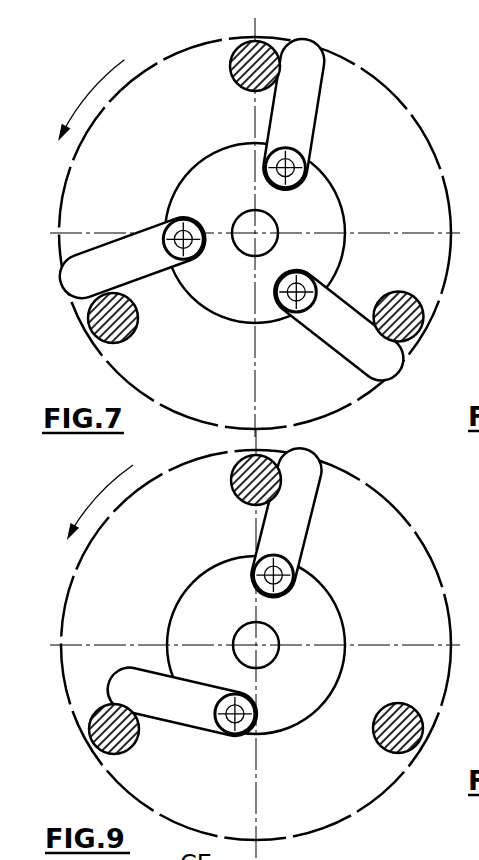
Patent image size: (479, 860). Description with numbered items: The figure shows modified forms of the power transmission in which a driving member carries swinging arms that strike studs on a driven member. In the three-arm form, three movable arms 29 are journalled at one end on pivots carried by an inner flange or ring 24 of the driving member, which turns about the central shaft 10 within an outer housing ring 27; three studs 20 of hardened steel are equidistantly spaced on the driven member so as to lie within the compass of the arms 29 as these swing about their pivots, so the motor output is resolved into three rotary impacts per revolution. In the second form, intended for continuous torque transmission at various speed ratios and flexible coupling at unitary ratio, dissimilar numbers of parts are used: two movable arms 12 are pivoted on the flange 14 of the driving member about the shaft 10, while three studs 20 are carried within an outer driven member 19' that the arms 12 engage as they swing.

In FIG. 7, the outer housing ring 27 is at (423, 138).
In FIG. 7, the inner ring 24 is at (347, 225).
In FIG. 7, the shaft 10 is at (277, 223).
In FIG. 9, the shaft 10 is at (277, 657).
In FIG. 7, the pivoted arm 29 is at (315, 118).
In FIG. 7, the stud 20 is at (232, 74).
In FIG. 9, the stud 20 is at (232, 491).
In FIG. 9, the outer drum 19' is at (256, 645).
In FIG. 9, the flange 14 is at (337, 604).
In FIG. 9, the movable arm 12 is at (317, 518).